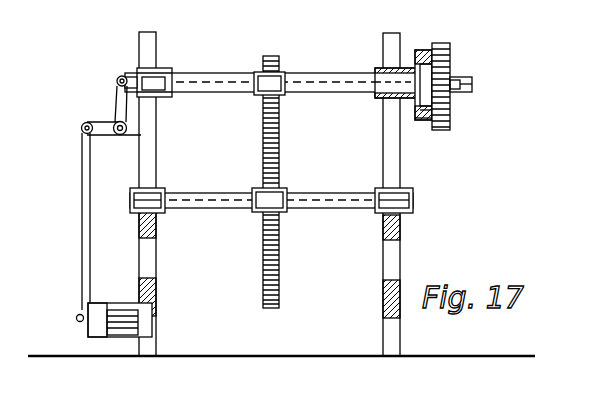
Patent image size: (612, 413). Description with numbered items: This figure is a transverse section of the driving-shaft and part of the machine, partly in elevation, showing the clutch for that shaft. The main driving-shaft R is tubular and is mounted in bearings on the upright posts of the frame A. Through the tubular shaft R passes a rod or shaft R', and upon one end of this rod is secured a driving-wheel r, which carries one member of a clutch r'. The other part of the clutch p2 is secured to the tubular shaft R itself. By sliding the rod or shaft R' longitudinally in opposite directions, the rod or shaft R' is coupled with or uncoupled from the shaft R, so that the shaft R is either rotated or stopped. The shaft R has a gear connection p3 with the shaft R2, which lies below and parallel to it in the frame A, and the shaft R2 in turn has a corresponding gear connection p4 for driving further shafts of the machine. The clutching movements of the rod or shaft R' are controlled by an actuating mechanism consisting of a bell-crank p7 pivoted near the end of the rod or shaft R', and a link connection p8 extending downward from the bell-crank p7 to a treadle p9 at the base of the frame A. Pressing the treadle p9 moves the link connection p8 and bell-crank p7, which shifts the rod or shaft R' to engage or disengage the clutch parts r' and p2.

The frame post A is at (269, 194).
The main driving-shaft R is at (272, 73).
The shaft R2 is at (271, 187).
The rod or shaft R' is at (482, 84).
The driving-wheel r is at (440, 83).
The clutch member r' is at (461, 127).
The clutch part p2 is at (423, 120).
The gear connection p3 is at (270, 52).
The gear connection p4 is at (285, 248).
The bell-crank p7 is at (117, 98).
The link connection p8 is at (87, 220).
The treadle p9 is at (98, 328).